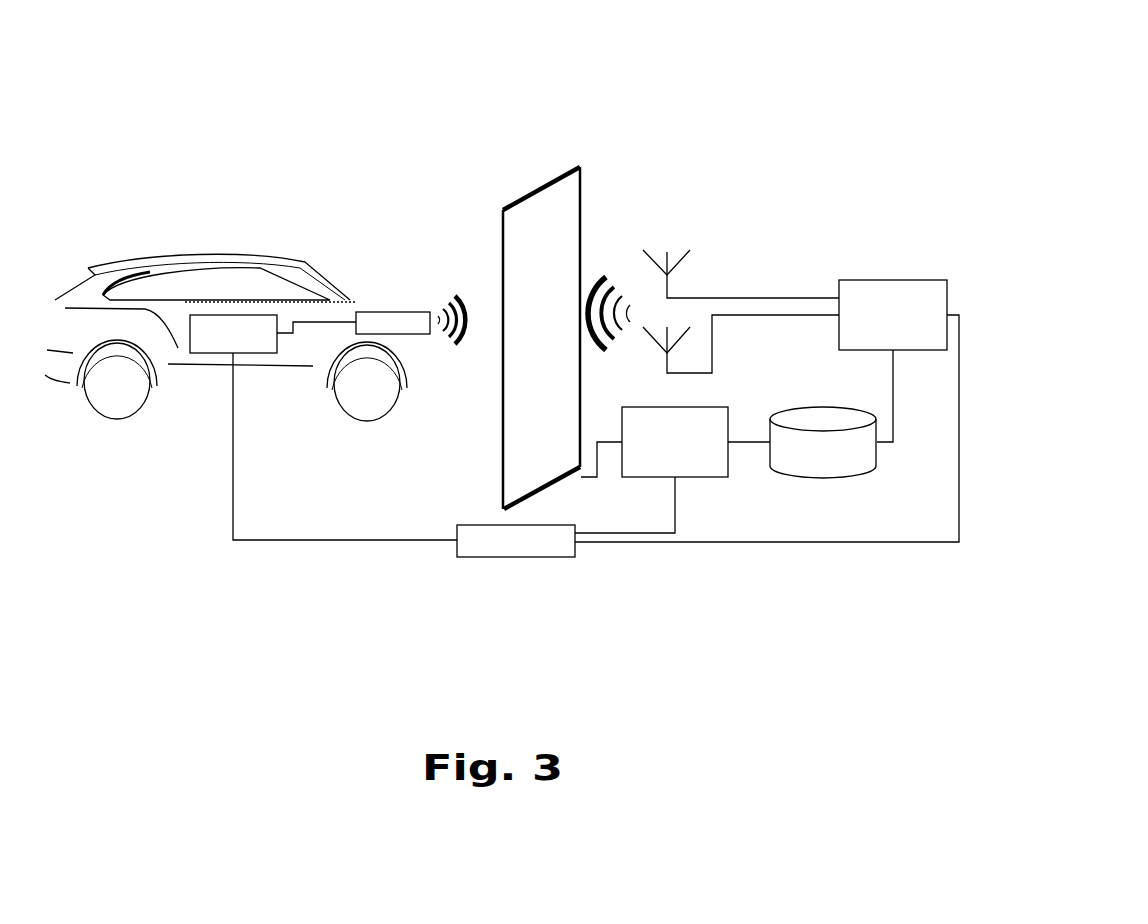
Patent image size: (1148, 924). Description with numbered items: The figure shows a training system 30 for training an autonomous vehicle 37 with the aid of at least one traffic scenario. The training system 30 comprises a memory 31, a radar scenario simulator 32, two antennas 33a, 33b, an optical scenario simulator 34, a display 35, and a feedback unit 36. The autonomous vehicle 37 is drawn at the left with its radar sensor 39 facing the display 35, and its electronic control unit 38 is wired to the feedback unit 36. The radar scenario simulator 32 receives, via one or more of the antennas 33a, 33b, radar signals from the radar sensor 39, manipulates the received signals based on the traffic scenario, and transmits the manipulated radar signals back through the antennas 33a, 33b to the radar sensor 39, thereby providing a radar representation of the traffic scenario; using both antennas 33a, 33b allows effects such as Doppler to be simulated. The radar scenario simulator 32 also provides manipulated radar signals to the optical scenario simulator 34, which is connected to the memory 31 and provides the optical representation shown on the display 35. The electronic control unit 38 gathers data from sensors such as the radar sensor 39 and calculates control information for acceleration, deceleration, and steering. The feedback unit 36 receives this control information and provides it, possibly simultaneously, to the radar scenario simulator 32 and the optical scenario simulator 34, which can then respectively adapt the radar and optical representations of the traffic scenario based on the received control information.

The training system 30 is at (768, 70).
The memory 31 is at (788, 405).
The radar scenario simulator 32 is at (857, 278).
The first antenna 33a is at (667, 252).
The second antenna 33b is at (657, 362).
The optical scenario simulator 34 is at (728, 406).
The display 35 is at (580, 167).
The feedback unit 36 is at (493, 558).
The autonomous vehicle 37 is at (172, 263).
The electronic control unit 38 is at (213, 315).
The radar sensor 39 is at (373, 312).